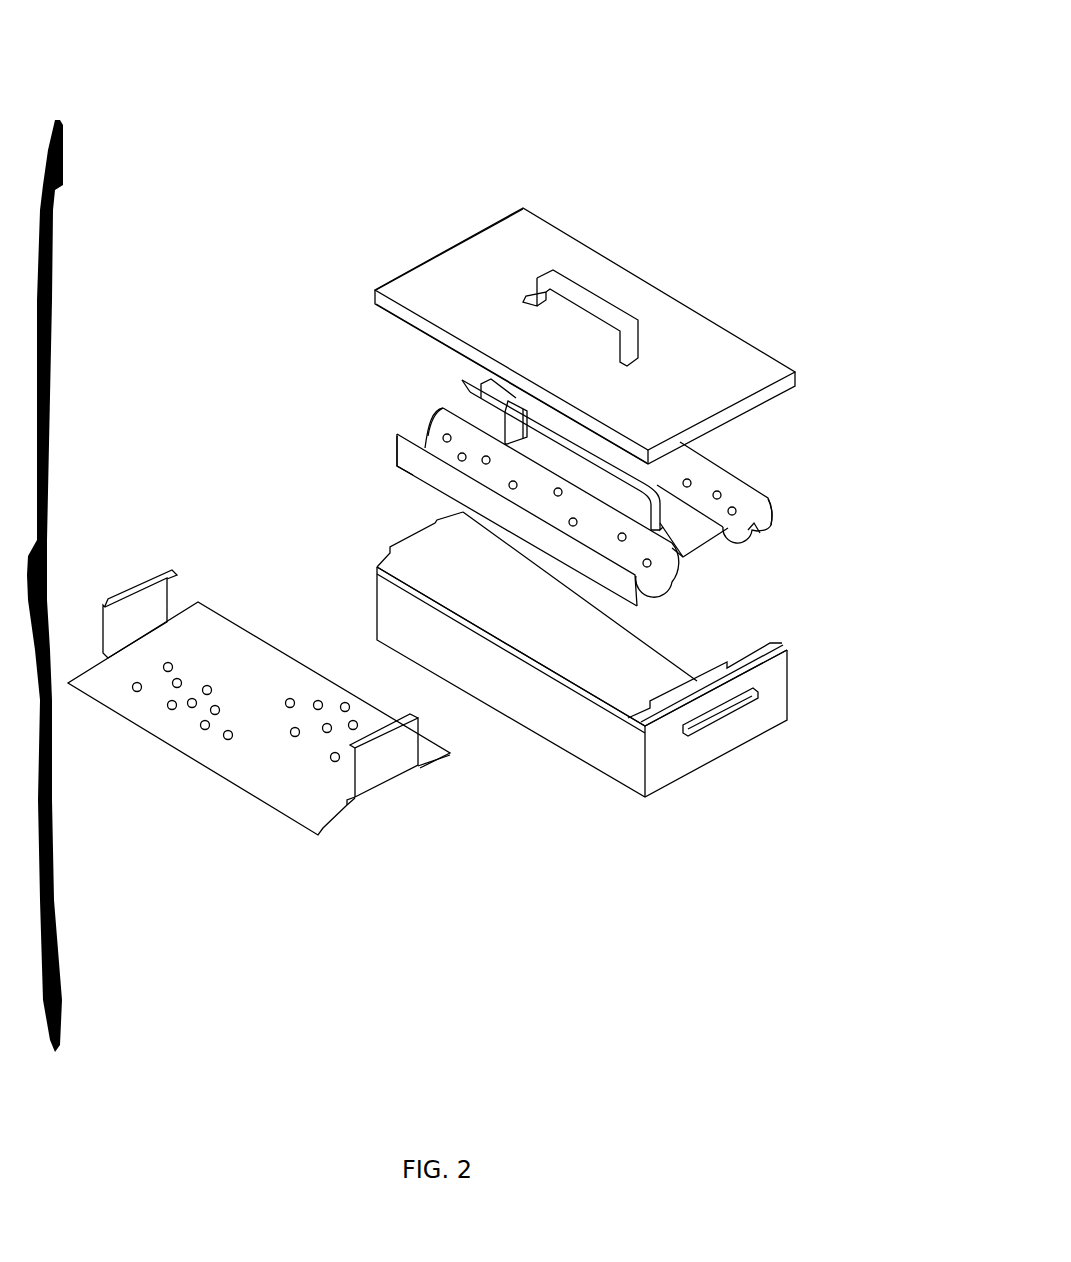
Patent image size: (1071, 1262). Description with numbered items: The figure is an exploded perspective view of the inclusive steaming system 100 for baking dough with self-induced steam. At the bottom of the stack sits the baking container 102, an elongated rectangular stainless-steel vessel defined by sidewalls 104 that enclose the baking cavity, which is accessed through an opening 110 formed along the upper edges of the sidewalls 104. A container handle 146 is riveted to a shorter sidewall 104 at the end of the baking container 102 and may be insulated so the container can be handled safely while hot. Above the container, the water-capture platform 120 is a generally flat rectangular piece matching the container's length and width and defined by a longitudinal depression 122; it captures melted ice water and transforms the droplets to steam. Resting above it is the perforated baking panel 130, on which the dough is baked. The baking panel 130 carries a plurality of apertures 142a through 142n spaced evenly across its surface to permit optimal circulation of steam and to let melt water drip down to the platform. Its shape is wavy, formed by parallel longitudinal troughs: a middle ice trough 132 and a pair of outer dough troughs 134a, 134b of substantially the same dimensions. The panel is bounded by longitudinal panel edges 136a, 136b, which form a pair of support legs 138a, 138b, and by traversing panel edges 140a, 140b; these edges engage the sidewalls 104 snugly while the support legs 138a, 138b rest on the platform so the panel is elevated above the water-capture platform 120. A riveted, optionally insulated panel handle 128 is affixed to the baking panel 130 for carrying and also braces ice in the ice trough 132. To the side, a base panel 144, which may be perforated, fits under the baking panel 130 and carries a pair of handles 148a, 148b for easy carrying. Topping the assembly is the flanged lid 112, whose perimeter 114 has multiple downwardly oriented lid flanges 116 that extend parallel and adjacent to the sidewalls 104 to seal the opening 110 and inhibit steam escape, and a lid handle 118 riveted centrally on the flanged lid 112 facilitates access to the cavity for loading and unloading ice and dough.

The inclusive steaming system 100 is at (118, 86).
The baking container 102 is at (625, 825).
The sidewalls 104 is at (485, 694).
The opening 110 is at (375, 566).
The flanged lid 112 is at (700, 296).
The perimeter 114 is at (373, 289).
The lid flanges 116 is at (457, 348).
The lid handle 118 is at (573, 290).
The water-capture platform 120 is at (781, 628).
The longitudinal depression 122 is at (435, 523).
The panel handle 128 is at (465, 407).
The perforated baking panel 130 is at (840, 545).
The ice trough 132 is at (690, 537).
The dough trough 134a is at (425, 446).
The dough trough 134b is at (752, 528).
The longitudinal panel edge 136a is at (397, 433).
The longitudinal panel edge 136b is at (717, 467).
The support leg 138a is at (413, 473).
The support leg 138b is at (773, 523).
The traversing panel edge 140a is at (480, 388).
The traversing panel edge 140b is at (677, 549).
The aperture 142a is at (717, 493).
The aperture 142n is at (653, 565).
The base panel 144 is at (290, 820).
The container handle 146 is at (718, 710).
The handle 148a is at (148, 574).
The handle 148b is at (377, 743).